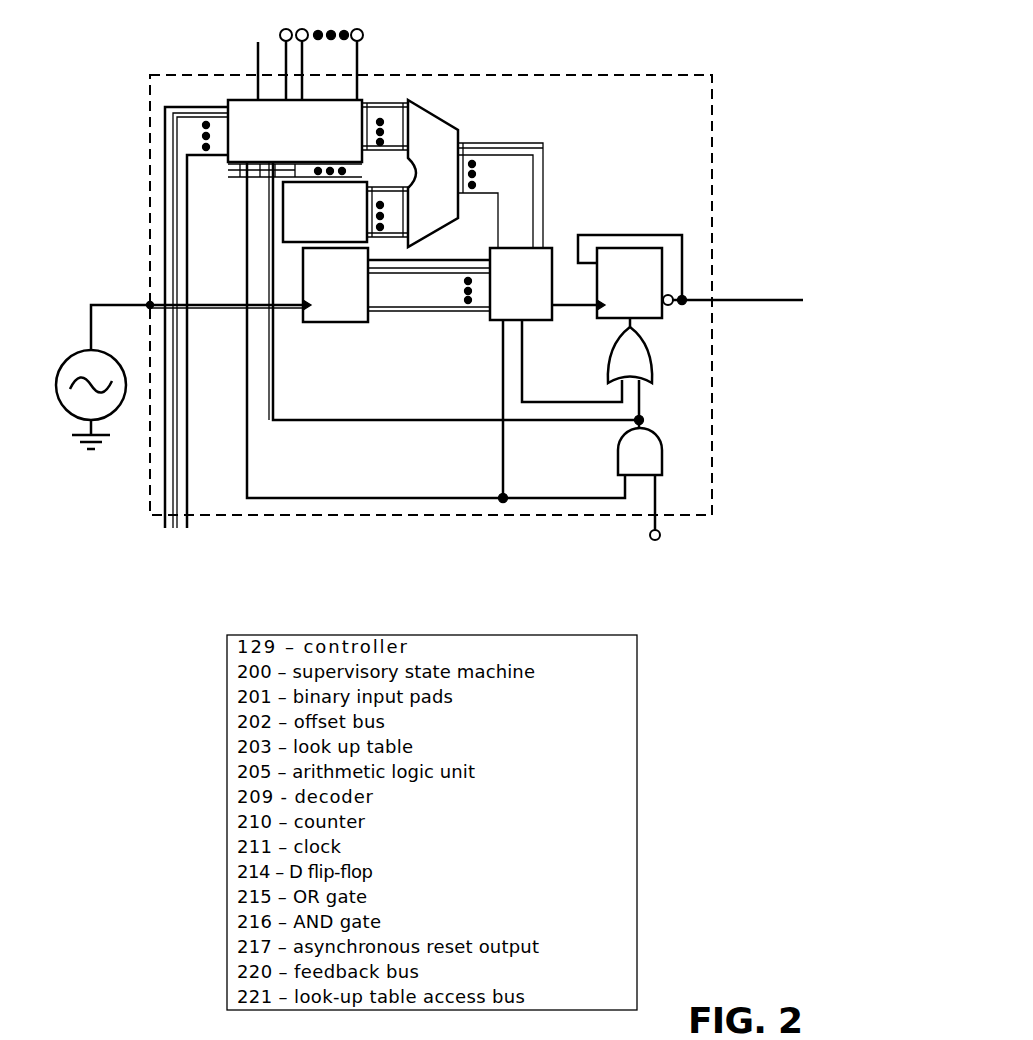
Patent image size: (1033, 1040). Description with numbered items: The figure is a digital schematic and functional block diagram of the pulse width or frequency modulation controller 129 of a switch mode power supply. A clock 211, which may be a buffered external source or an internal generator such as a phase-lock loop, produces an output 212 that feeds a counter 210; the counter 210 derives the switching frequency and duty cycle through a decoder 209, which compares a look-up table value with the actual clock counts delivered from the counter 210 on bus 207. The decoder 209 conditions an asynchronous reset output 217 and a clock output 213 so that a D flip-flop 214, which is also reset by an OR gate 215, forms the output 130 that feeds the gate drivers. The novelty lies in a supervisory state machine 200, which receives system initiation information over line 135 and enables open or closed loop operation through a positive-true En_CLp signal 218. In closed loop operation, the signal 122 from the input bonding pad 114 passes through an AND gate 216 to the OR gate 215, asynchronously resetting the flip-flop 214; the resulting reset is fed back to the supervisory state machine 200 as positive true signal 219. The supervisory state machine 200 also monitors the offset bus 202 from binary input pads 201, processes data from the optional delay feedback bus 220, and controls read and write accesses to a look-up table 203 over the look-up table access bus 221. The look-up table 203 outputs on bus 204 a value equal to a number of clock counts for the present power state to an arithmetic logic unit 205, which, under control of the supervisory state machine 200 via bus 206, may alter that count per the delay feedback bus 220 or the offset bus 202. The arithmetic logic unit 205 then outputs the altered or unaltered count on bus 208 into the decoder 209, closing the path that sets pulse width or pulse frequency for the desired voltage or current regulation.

The controller 129 is at (165, 75).
The line 135 is at (258, 54).
The binary input pads 201 is at (354, 29).
The offset bus 202 is at (356, 67).
The supervisory state machine 200 is at (311, 142).
The bus 206 is at (394, 96).
The bus 204 is at (396, 178).
The bus 208 is at (488, 133).
The look-up table 203 is at (341, 223).
The arithmetic logic unit 205 is at (448, 209).
The bus 207 is at (462, 267).
The decoder 209 is at (536, 293).
The counter 210 is at (351, 292).
The clock output 213 is at (562, 302).
The D flip-flop 214 is at (644, 292).
The output 130 is at (767, 293).
The OR gate 215 is at (630, 350).
The AND gate 216 is at (640, 447).
The asynchronous reset output 217 is at (538, 402).
The signal 219 is at (374, 420).
The En_CLp signal 218 is at (336, 498).
The delay feedback bus 220 is at (188, 385).
The look-up table access bus 221 is at (280, 174).
The clock 211 is at (70, 357).
The output of clock 212 is at (92, 330).
The signal 122 is at (657, 503).
The input bonding pad 114 is at (661, 538).